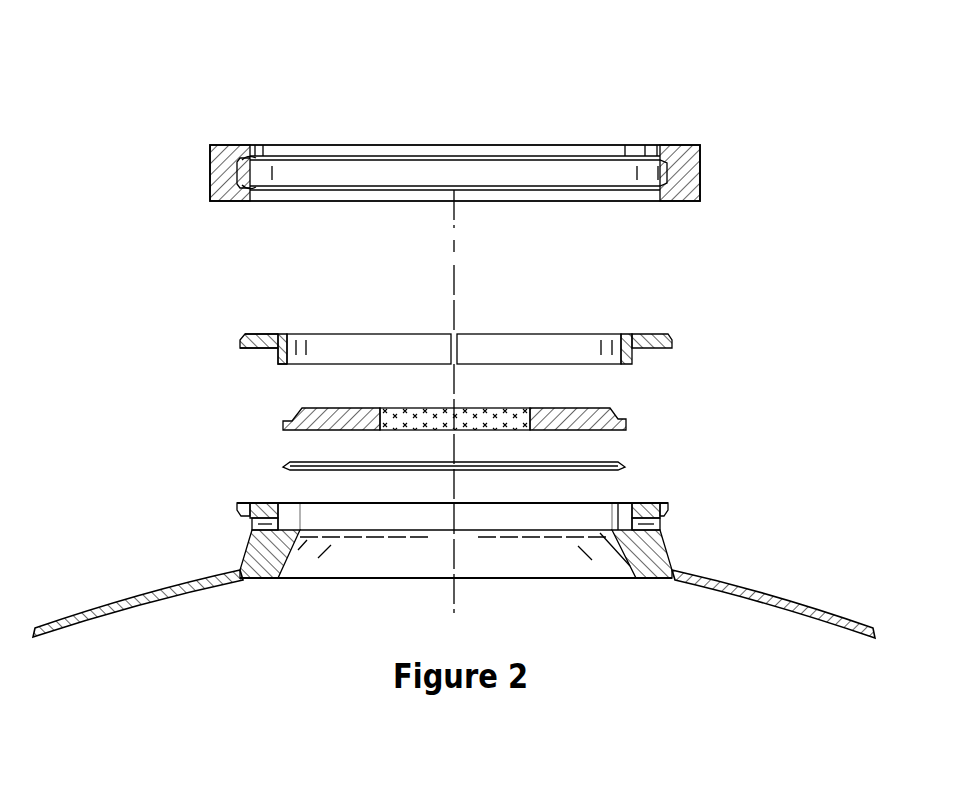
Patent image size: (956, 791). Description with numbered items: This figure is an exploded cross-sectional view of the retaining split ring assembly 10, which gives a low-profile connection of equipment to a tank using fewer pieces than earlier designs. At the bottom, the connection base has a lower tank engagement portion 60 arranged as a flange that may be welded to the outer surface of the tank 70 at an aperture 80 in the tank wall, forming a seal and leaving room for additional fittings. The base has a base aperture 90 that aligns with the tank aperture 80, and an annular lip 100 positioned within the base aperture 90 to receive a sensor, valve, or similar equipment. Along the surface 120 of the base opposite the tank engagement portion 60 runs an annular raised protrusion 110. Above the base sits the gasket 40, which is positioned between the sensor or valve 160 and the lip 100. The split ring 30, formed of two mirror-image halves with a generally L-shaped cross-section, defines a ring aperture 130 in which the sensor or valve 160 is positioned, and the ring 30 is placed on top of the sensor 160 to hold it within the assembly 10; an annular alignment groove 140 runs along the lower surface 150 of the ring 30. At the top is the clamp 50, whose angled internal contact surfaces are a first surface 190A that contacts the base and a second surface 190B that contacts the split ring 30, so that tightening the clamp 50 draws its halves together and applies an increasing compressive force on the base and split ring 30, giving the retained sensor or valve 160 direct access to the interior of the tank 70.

The retaining split ring assembly 10 is at (124, 263).
The split ring 30 is at (421, 342).
The gasket 40 is at (624, 465).
The clamp 50 is at (493, 167).
The tank engagement portion 60 is at (262, 558).
The tank 70 is at (108, 598).
The aperture 80 is at (415, 578).
The base aperture 90 is at (347, 515).
The lip 100 is at (460, 537).
The protrusion 110 is at (250, 503).
The surface 120 is at (273, 503).
The ring aperture 130 is at (510, 348).
The alignment groove 140 is at (246, 351).
The lower surface 150 is at (265, 350).
The sensor or valve 160 is at (602, 418).
The first surface 190A is at (248, 183).
The second surface 190B is at (250, 160).